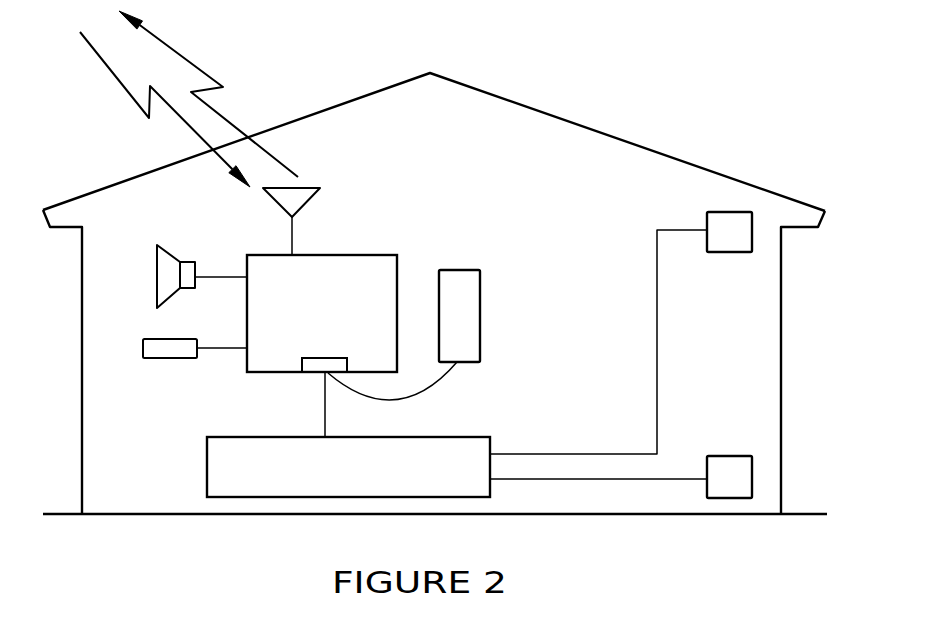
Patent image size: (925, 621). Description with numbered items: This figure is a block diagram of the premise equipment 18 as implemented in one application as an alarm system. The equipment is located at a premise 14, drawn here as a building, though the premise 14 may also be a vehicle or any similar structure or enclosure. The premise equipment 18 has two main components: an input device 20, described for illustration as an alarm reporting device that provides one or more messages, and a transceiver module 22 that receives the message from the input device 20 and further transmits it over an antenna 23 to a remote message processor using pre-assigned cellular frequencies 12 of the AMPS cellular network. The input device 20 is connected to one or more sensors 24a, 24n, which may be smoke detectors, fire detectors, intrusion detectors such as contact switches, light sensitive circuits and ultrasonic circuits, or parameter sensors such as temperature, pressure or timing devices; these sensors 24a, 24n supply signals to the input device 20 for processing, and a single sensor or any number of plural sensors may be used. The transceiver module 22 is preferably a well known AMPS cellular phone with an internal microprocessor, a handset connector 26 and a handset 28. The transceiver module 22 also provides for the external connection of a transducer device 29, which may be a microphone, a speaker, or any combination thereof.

The pre-assigned cellular frequencies 12 is at (128, 96).
The premise 14 is at (338, 88).
The premise equipment 18 is at (441, 226).
The input device 20 is at (207, 475).
The transceiver module 22 is at (337, 315).
The antenna 23 is at (308, 202).
The sensor 24a is at (712, 212).
The sensor 24n is at (708, 456).
The handset connector 26 is at (312, 373).
The handset 28 is at (480, 320).
The transducer device 29 is at (171, 254).